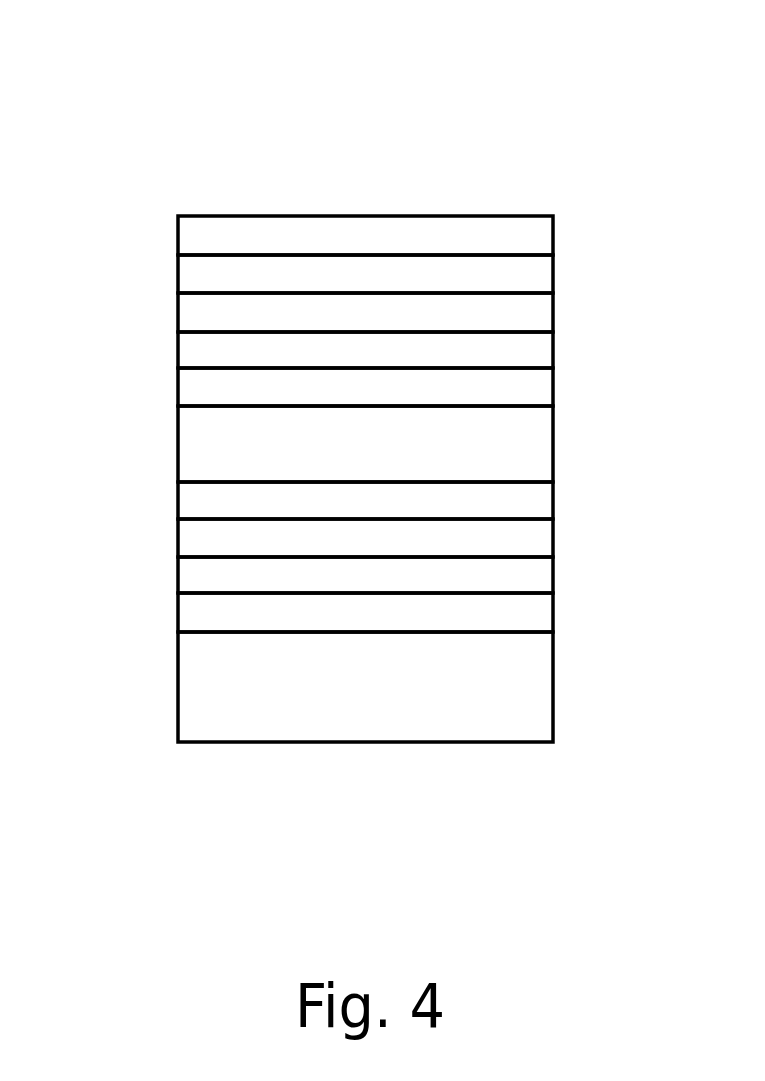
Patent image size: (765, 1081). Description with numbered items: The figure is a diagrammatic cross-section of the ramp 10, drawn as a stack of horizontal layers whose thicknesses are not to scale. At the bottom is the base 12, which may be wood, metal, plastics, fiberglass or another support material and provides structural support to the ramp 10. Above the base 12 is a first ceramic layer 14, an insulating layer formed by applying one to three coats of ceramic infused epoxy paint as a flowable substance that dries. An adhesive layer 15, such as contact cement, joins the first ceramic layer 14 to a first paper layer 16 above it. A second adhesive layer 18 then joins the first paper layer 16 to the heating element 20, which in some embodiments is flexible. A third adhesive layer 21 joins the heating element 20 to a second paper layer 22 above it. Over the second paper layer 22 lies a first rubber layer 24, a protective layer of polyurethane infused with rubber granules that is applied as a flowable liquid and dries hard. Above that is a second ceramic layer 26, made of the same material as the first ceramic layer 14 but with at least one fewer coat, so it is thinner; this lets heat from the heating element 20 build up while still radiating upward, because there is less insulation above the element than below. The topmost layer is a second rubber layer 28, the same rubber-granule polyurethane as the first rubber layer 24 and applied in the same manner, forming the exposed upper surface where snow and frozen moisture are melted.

The ramp 10 is at (140, 110).
The base 12 is at (528, 656).
The first ceramic layer 14 is at (532, 617).
The adhesive layer 15 is at (532, 580).
The first paper layer 16 is at (532, 542).
The second adhesive layer 18 is at (532, 503).
The heating element 20 is at (530, 450).
The third adhesive layer 21 is at (530, 391).
The second paper layer 22 is at (525, 353).
The first rubber layer 24 is at (525, 319).
The second ceramic layer 26 is at (525, 281).
The second rubber layer 28 is at (525, 243).